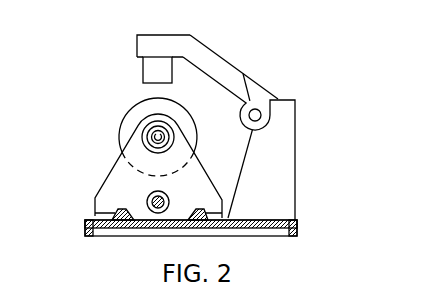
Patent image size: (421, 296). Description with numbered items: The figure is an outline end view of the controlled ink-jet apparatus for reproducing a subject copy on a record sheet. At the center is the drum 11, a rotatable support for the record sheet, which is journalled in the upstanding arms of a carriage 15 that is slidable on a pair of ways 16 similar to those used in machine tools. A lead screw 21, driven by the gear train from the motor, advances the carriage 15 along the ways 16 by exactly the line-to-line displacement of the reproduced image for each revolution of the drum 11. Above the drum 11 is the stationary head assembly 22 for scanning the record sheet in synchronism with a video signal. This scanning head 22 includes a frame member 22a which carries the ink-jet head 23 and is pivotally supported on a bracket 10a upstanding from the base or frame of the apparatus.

The bracket 10a is at (283, 158).
The drum 11 is at (121, 127).
The carriage 15 is at (112, 190).
The ways 16 is at (110, 213).
The lead screw 21 is at (167, 194).
The head assembly 22 is at (172, 25).
The frame member 22a is at (213, 60).
The ink-jet head 23 is at (143, 68).